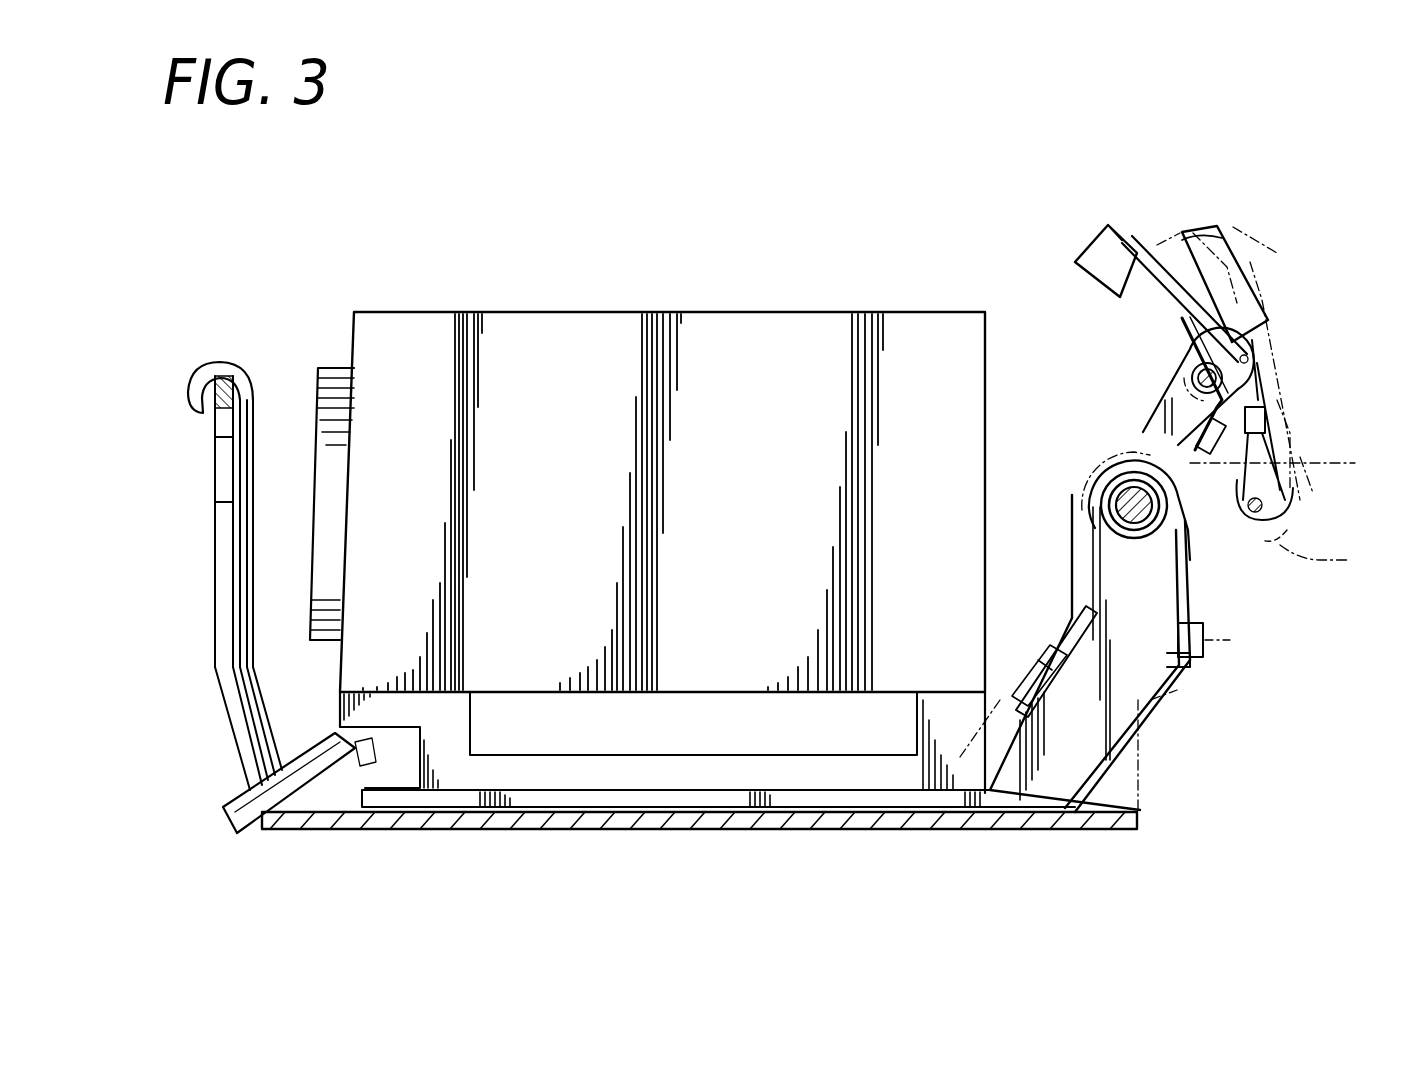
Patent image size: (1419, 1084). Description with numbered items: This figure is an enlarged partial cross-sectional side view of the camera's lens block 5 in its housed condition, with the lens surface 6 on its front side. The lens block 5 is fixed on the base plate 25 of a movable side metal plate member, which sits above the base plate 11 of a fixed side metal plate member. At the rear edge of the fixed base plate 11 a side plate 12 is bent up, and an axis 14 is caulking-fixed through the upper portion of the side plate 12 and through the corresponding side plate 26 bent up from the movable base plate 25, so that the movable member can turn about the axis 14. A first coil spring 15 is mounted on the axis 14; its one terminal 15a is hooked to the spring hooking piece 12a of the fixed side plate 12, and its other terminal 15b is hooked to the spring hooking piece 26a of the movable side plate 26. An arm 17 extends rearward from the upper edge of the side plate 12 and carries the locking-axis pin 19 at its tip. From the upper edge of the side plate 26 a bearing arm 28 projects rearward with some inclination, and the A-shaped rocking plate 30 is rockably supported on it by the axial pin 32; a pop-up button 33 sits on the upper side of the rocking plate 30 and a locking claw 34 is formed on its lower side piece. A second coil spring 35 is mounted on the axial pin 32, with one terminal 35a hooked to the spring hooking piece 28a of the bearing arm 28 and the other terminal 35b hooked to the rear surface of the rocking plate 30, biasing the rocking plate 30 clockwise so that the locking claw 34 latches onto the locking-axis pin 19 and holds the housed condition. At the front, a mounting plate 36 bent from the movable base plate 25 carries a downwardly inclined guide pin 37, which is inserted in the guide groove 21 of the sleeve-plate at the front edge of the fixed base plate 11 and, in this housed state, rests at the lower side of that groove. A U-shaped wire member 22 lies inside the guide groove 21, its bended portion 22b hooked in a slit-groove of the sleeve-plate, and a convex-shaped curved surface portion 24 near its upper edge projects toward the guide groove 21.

The lens block 5 is at (712, 335).
The lens surface 6 is at (325, 415).
The base plate of fixed side metal plate member 11 is at (768, 830).
The side plate 12 is at (1178, 685).
The spring hooking piece 12a is at (1205, 642).
The axis 14 is at (1100, 470).
The first coil spring 15 is at (1088, 500).
The terminal of first coil spring 15a is at (1200, 600).
The terminal of first coil spring 15b is at (1070, 640).
The arm 17 is at (1335, 580).
The locking-axis pin 19 is at (1290, 530).
The guide groove 21 is at (222, 642).
The wire member 22 is at (245, 555).
The bended portion 22b is at (205, 385).
The convex-shaped curved surface portion 24 is at (223, 470).
The base plate of movable side metal plate member 25 is at (660, 800).
The side plate 26 is at (1112, 700).
The spring hooking piece 26a is at (1035, 690).
The bearing arm 28 is at (1170, 378).
The spring hooking piece 28a is at (1285, 460).
The rocking plate 30 is at (1272, 392).
The axial pin 32 is at (1250, 352).
The pop-up button 33 is at (1210, 252).
The locking claw 34 is at (1355, 463).
The second coil spring 35 is at (1185, 350).
The terminal of second coil spring 35a is at (1195, 440).
The terminal of second coil spring 35b is at (1220, 312).
The mounting plate 36 is at (362, 792).
The guide pin 37 is at (228, 808).